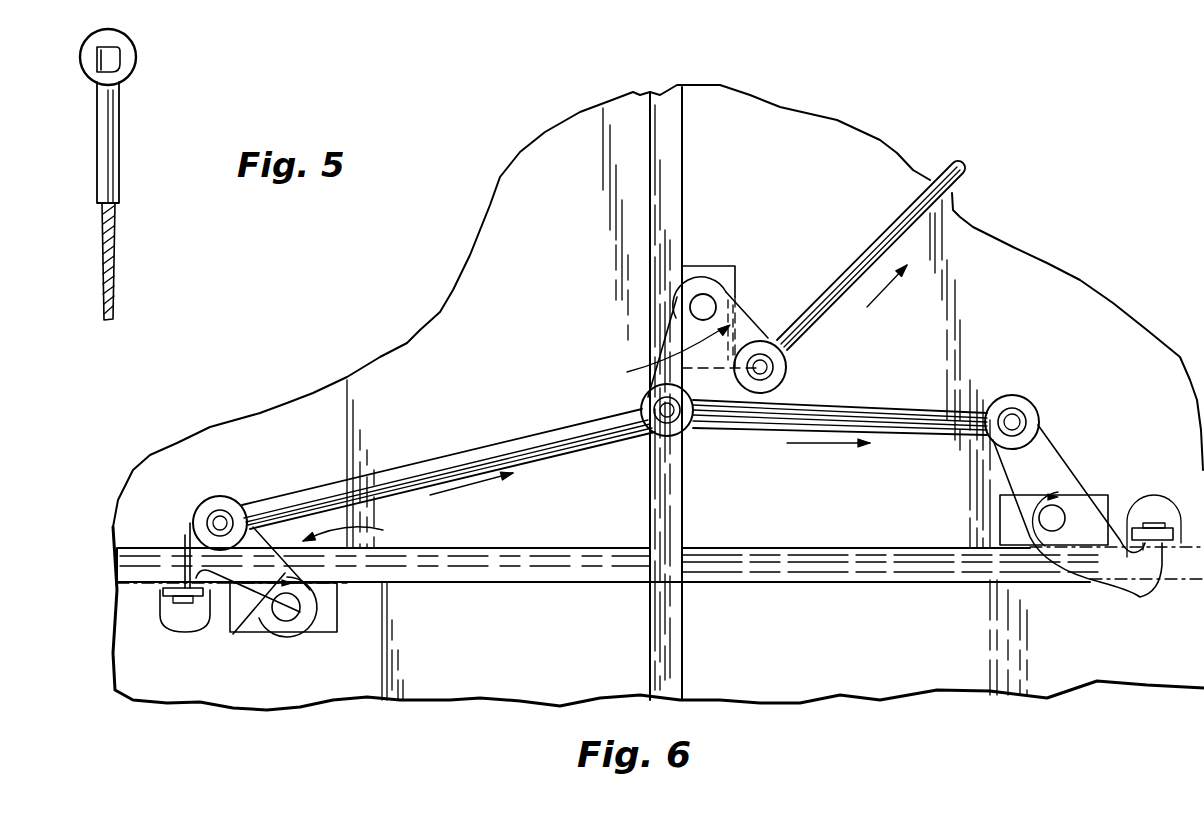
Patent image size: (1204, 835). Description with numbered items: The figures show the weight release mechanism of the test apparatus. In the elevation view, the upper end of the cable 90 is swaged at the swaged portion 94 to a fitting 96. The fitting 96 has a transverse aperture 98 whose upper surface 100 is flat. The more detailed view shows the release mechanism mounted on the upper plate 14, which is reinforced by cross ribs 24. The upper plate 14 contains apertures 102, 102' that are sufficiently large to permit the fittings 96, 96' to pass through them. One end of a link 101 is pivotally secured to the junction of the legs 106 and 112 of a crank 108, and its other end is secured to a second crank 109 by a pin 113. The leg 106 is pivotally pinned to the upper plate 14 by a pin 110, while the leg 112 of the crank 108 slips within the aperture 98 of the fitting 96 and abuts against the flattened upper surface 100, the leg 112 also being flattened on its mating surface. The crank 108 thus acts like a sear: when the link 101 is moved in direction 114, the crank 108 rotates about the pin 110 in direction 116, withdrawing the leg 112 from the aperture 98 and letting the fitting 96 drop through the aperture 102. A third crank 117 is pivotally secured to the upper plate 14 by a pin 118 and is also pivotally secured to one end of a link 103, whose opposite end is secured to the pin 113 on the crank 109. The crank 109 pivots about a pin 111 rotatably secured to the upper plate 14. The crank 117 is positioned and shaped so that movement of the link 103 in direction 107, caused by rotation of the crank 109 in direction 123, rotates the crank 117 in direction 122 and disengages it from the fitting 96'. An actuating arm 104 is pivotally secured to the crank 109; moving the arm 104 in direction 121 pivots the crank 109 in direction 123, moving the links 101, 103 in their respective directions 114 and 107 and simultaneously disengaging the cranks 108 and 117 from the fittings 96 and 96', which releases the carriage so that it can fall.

In FIG. 6, the upper plate 14 is at (813, 142).
In FIG. 6, the cross ribs 24 is at (655, 508).
In FIG. 5, the cable 90 is at (110, 272).
In FIG. 5, the swaged portion 94 is at (112, 173).
In FIG. 5, the fitting 96 is at (96, 81).
In FIG. 6, the fitting 96 is at (176, 628).
In FIG. 5, the transverse aperture 98 is at (107, 67).
In FIG. 5, the upper surface 100 is at (113, 53).
In FIG. 6, the link 101 is at (483, 452).
In FIG. 6, the aperture 102 is at (189, 608).
In FIG. 6, the link 103 is at (830, 413).
In FIG. 6, the actuating arm 104 is at (847, 270).
In FIG. 6, the leg 106 is at (260, 627).
In FIG. 6, the direction 107 is at (825, 445).
In FIG. 6, the crank 108 is at (363, 538).
In FIG. 6, the second crank 109 is at (670, 333).
In FIG. 6, the pin 110 is at (297, 606).
In FIG. 6, the pin 111 is at (705, 298).
In FIG. 6, the leg 112 is at (183, 572).
In FIG. 6, the pin 113 is at (666, 414).
In FIG. 6, the direction 114 is at (468, 490).
In FIG. 6, the direction 116 is at (232, 632).
In FIG. 6, the third crank 117 is at (1008, 463).
In FIG. 6, the pin 118 is at (1040, 523).
In FIG. 6, the direction 121 is at (878, 295).
In FIG. 6, the direction 122 is at (1043, 490).
In FIG. 6, the direction 123 is at (659, 354).
In FIG. 6, the aperture 102' is at (1147, 504).
In FIG. 6, the fitting 96' is at (1170, 591).